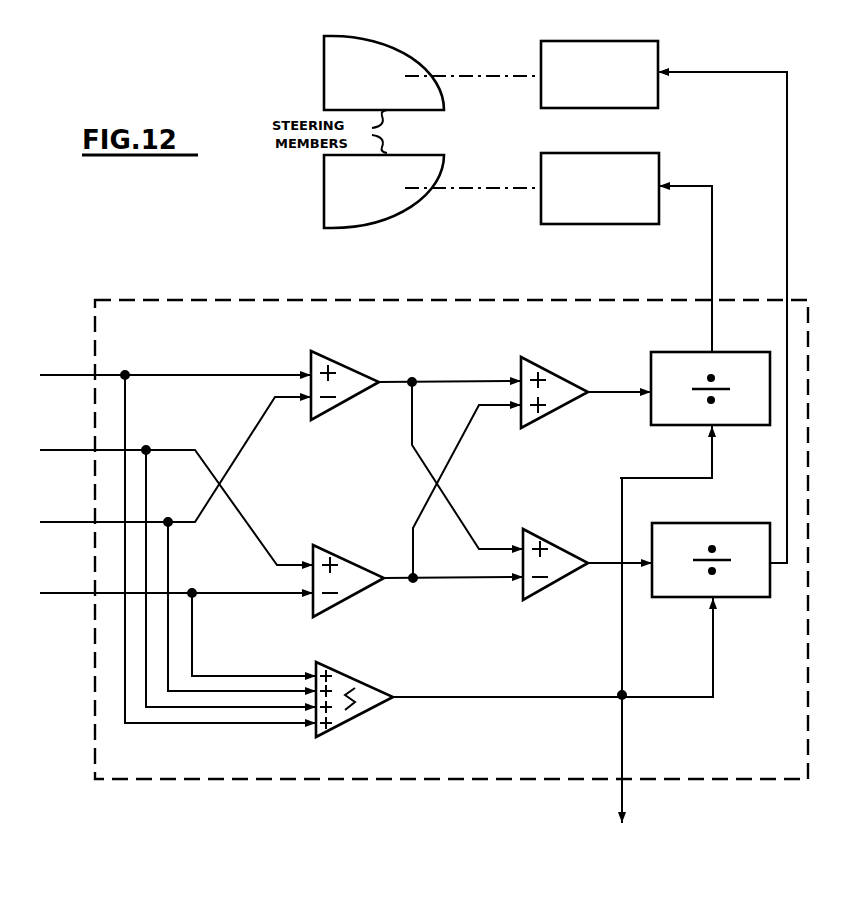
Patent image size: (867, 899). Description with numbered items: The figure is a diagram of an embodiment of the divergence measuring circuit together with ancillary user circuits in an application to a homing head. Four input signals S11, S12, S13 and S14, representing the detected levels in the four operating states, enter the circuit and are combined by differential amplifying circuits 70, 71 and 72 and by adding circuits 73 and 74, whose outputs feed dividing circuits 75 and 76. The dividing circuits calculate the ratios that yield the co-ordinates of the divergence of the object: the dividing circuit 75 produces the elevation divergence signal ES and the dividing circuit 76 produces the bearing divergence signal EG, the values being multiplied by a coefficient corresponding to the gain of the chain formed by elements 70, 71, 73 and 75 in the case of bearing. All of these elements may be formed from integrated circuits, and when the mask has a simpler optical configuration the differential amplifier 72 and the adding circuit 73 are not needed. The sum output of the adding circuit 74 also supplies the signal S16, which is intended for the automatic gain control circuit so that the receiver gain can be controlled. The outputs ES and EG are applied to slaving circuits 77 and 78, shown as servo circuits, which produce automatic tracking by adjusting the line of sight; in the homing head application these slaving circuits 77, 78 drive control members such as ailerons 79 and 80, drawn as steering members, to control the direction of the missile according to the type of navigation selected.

The differential amplifying circuit 70 is at (347, 366).
The differential amplifying circuit 71 is at (342, 548).
The differential amplifying circuit 72 is at (553, 541).
The adding circuit 73 is at (553, 367).
The adding circuit 74 is at (354, 676).
The dividing circuit 75 is at (692, 426).
The dividing circuit 76 is at (698, 604).
The slaving circuit 77 is at (541, 57).
The slaving circuit 78 is at (541, 175).
The aileron 79 is at (324, 75).
The aileron 80 is at (324, 190).
The detected level signal S11 is at (58, 375).
The detected level signal S12 is at (58, 450).
The detected level signal S13 is at (58, 522).
The detected level signal S14 is at (58, 593).
The AGC signal S16 is at (625, 797).
The elevation divergence signal ES is at (712, 329).
The bearing divergence signal EG is at (787, 498).